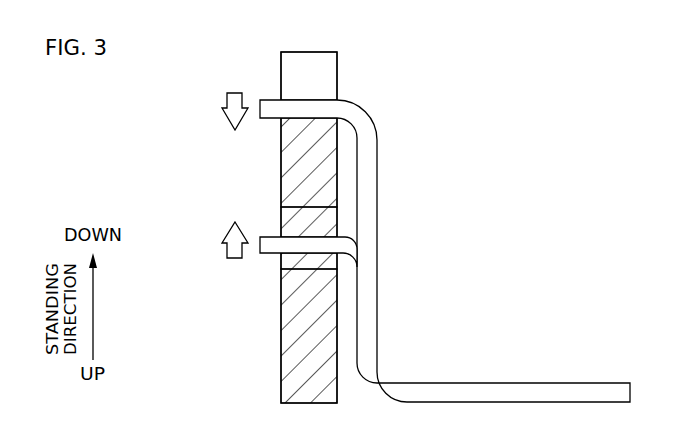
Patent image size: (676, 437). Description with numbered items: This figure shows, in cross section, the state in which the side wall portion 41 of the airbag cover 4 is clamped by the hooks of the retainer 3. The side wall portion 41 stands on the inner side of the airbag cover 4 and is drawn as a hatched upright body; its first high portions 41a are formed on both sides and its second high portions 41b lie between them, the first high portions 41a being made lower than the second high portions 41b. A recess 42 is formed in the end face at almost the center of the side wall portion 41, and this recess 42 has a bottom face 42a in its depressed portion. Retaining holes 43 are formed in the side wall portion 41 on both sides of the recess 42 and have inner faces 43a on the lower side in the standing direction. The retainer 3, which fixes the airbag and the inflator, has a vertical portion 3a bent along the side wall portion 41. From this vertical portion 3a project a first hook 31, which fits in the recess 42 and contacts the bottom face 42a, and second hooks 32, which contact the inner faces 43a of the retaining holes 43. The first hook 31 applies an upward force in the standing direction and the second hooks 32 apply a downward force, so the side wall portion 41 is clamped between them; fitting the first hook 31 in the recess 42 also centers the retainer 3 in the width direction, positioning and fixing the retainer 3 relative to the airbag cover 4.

The retainer 3 is at (445, 236).
The vertical portion 3a is at (378, 331).
The first hook 31 is at (378, 124).
The second hook 32 is at (378, 262).
The airbag cover 4 is at (199, 130).
The side wall portion 41 is at (258, 207).
The first high portion 41a is at (281, 327).
The second high portion 41b is at (281, 165).
The recess 42 is at (311, 60).
The bottom face 42a is at (310, 117).
The retaining hole 43 is at (281, 269).
The inner face 43a is at (309, 236).